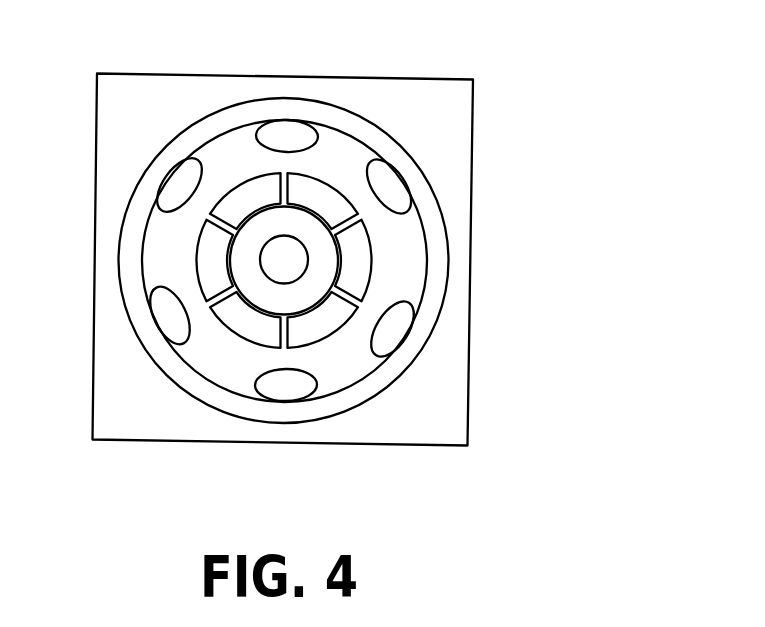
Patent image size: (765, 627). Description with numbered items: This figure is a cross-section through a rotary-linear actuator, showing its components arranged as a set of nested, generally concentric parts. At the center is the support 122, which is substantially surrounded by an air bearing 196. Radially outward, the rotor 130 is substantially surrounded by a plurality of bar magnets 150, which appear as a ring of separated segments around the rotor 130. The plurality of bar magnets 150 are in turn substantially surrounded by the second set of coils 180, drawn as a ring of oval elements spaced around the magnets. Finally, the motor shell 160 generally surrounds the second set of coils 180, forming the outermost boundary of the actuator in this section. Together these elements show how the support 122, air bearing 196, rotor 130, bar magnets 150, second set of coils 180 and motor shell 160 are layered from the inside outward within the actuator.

The support 122 is at (284, 261).
The rotor 130 is at (296, 222).
The plurality of bar magnets 150 is at (365, 248).
The motor shell 160 is at (428, 322).
The second set of coils 180 is at (381, 174).
The air bearing 196 is at (383, 283).